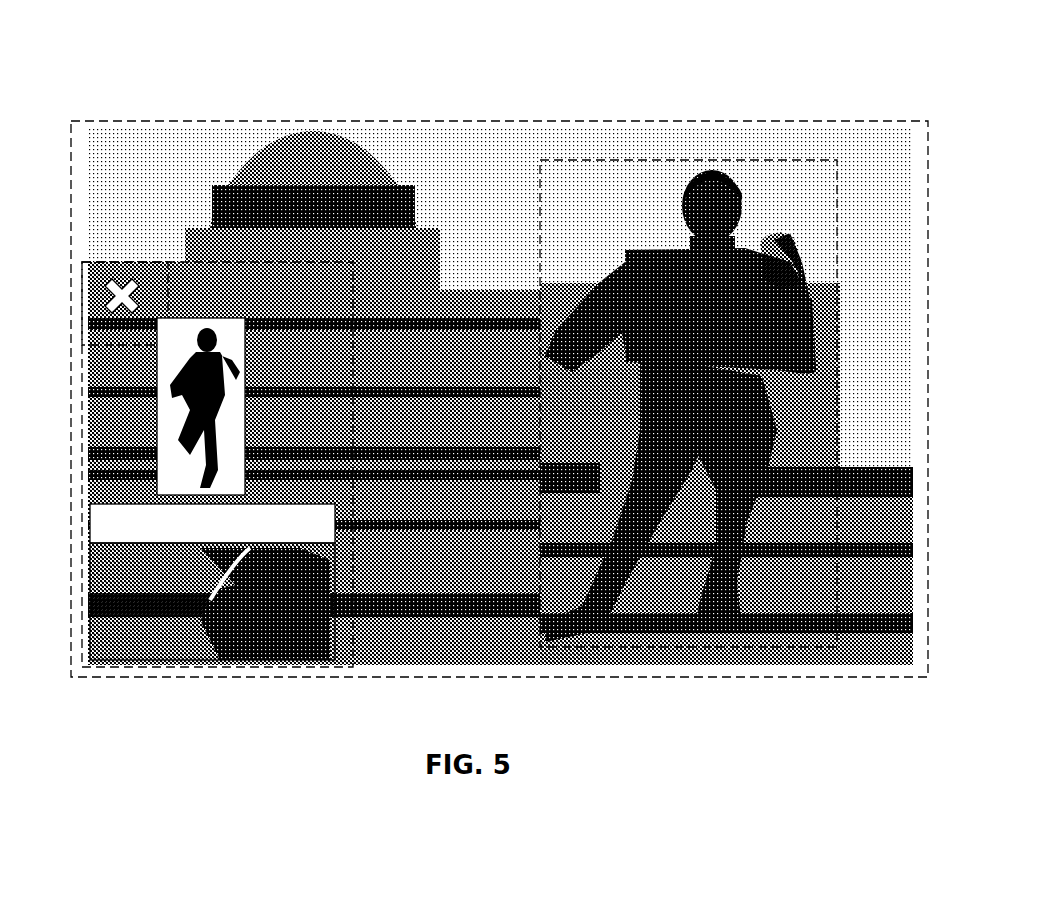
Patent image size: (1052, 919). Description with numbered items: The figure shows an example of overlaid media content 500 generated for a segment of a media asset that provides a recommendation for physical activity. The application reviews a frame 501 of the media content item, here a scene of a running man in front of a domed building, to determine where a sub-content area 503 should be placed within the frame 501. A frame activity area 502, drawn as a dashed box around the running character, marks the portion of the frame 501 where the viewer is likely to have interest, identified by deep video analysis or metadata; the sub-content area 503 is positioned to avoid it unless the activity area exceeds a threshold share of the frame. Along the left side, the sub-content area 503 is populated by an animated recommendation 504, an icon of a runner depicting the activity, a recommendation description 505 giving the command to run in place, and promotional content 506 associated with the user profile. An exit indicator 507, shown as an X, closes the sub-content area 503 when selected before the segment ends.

The overlaid media content 500 is at (118, 40).
The frame 501 is at (408, 120).
The frame activity area 502 is at (704, 158).
The sub-content area 503 is at (242, 260).
The animated recommendation 504 is at (150, 392).
The recommendation description 505 is at (108, 527).
The promotional content 506 is at (108, 630).
The exit indicator 507 is at (130, 262).